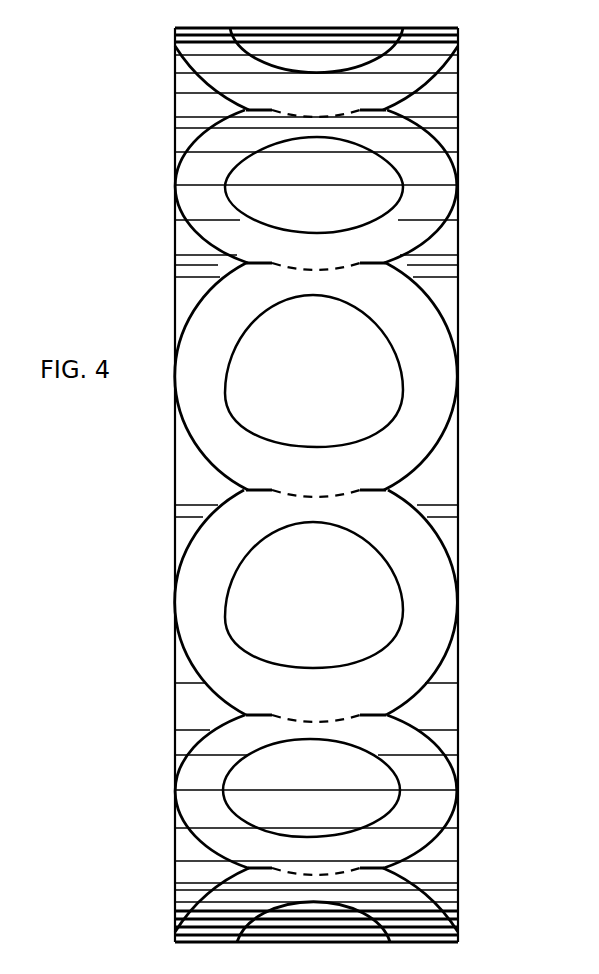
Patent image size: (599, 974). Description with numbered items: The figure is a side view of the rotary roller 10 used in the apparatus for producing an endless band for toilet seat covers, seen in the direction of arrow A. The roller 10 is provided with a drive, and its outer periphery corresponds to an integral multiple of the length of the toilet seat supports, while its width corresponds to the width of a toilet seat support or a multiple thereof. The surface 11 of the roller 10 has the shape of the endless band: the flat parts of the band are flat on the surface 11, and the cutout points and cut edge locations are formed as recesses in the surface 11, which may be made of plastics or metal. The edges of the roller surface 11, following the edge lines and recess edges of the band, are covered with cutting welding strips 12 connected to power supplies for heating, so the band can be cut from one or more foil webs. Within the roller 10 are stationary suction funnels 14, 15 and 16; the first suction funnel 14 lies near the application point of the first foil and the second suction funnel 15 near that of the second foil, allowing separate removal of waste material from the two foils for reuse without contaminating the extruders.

The rotary roller 10 is at (462, 439).
The roller surface 11 is at (437, 179).
The cutting welding strips 12 is at (400, 203).
The first suction funnel 14 is at (360, 593).
The second suction funnel 15 is at (353, 170).
The suction funnel 16 is at (330, 67).